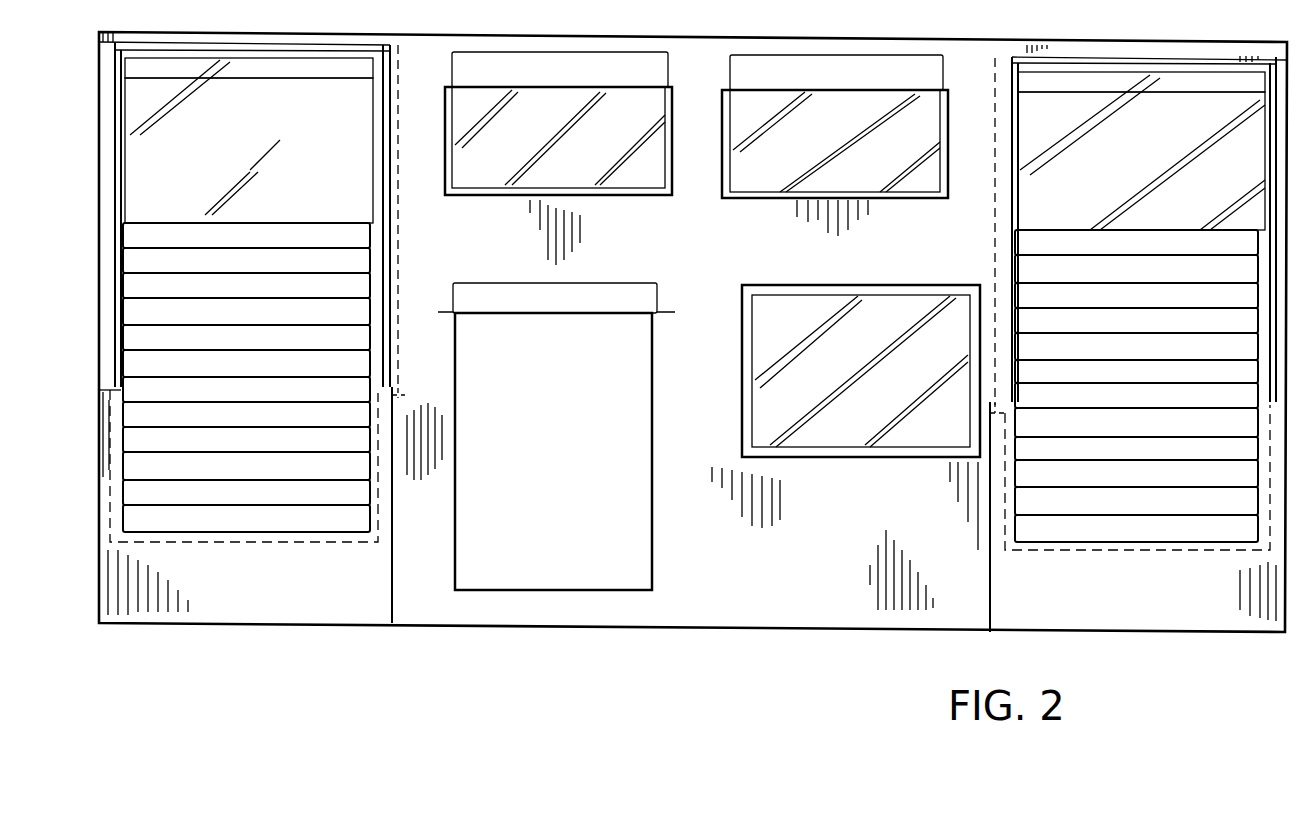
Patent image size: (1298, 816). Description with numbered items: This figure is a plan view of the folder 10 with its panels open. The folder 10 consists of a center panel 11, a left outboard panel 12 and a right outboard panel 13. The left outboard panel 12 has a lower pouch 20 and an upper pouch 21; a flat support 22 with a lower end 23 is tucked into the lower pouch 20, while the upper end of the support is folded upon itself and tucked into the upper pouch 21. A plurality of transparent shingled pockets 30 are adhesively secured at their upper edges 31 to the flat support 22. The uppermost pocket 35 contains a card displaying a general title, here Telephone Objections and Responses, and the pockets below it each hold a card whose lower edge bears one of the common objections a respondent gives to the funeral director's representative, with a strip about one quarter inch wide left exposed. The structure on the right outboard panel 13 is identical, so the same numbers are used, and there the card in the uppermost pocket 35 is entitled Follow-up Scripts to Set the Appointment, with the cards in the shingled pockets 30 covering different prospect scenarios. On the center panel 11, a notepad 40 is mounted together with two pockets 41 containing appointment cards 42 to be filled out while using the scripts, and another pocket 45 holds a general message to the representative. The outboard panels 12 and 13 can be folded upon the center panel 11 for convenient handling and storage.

The folder 10 is at (497, 676).
The center panel 11 is at (742, 603).
The left outboard panel 12 is at (284, 612).
The right outboard panel 13 is at (1138, 628).
The lower pouch 20 is at (370, 592).
The upper pouch 21 is at (404, 46).
The flat support 22 is at (398, 246).
The lower end 23 is at (406, 398).
The shingled pockets 30 is at (372, 287).
The upper edges 31 is at (340, 75).
The uppermost pocket 35 is at (352, 193).
The notepad 40 is at (566, 485).
The pockets 41 is at (650, 122).
The appointment cards 42 is at (656, 70).
The pocket 45 is at (854, 356).